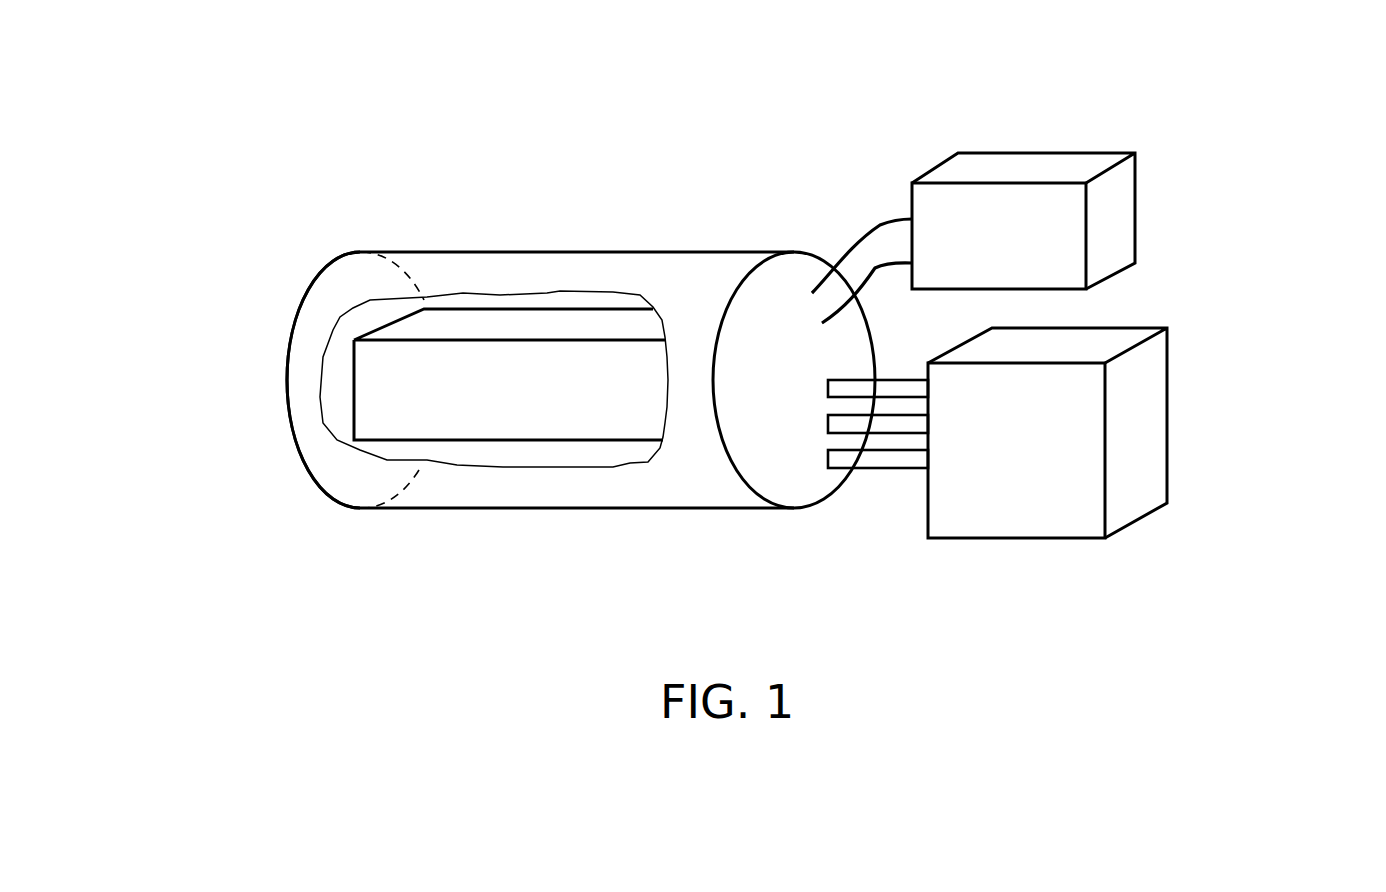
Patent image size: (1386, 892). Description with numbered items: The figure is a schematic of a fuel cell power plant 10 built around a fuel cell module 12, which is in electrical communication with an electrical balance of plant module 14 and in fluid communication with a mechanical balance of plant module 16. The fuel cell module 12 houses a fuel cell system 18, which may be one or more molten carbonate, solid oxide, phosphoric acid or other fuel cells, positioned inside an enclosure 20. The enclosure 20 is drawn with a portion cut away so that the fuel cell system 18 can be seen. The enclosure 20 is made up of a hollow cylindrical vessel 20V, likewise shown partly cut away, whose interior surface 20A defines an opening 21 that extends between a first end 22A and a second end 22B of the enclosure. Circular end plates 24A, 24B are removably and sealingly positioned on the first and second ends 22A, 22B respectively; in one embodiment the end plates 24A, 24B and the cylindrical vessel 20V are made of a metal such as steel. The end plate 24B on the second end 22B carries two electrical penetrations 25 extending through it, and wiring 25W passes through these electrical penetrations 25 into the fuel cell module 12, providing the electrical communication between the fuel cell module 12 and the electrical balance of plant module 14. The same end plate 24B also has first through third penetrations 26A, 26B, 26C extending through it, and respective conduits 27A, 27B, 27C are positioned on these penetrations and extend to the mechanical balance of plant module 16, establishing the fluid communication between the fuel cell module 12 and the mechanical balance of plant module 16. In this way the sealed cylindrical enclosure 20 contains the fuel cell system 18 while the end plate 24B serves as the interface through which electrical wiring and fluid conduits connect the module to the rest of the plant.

The fuel cell power plant 10 is at (702, 82).
The fuel cell module 12 is at (508, 192).
The electrical balance of plant module 14 is at (1135, 125).
The mechanical balance of plant module 16 is at (1183, 373).
The fuel cell system 18 is at (466, 418).
The enclosure 20 is at (413, 245).
The interior surface 20A is at (578, 297).
The hollow cylindrical vessel 20V is at (676, 267).
The opening 21 is at (423, 452).
The first end 22A is at (288, 402).
The second end 22B is at (812, 293).
The circular end plate 24A is at (336, 292).
The circular end plate 24B is at (774, 478).
The electrical penetrations 25 is at (812, 293).
The wiring 25W is at (893, 217).
The first penetration 26A is at (828, 395).
The second penetration 26B is at (828, 432).
The third penetration 26C is at (830, 468).
The conduit 27A is at (871, 385).
The conduit 27B is at (911, 423).
The conduit 27C is at (872, 461).